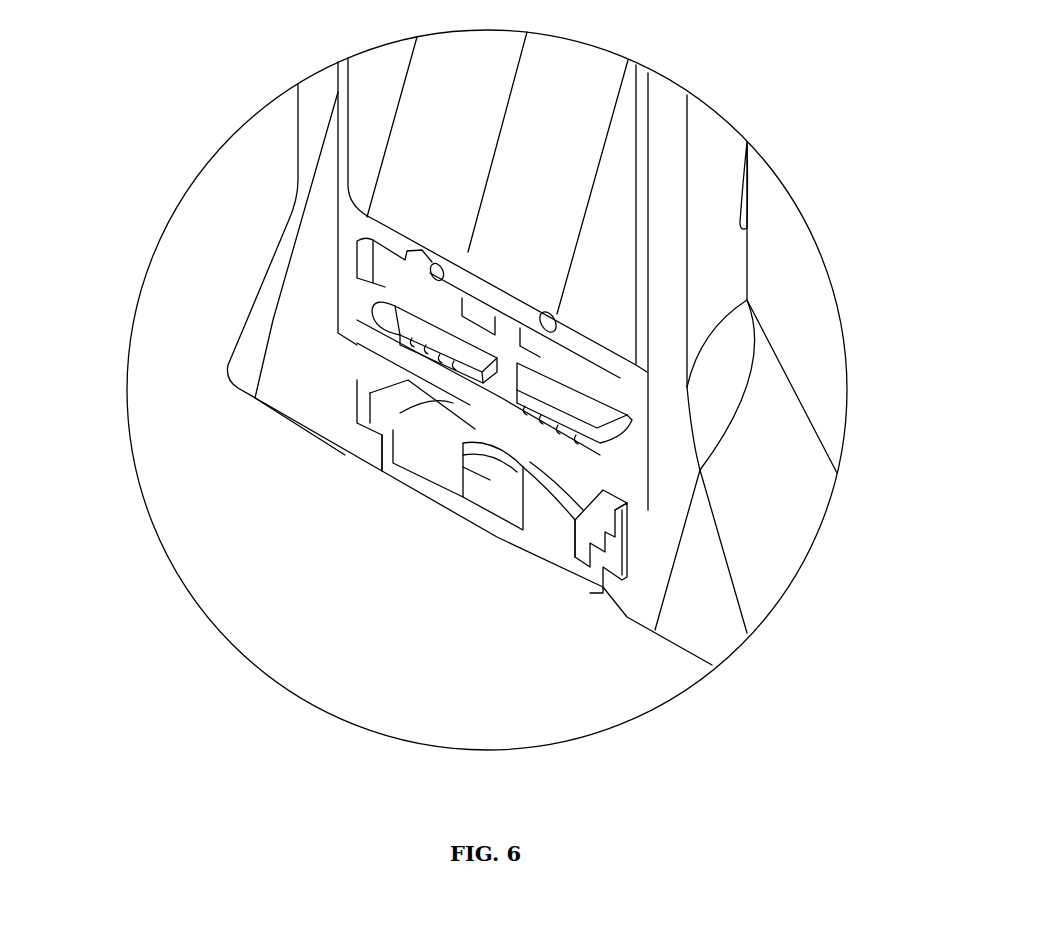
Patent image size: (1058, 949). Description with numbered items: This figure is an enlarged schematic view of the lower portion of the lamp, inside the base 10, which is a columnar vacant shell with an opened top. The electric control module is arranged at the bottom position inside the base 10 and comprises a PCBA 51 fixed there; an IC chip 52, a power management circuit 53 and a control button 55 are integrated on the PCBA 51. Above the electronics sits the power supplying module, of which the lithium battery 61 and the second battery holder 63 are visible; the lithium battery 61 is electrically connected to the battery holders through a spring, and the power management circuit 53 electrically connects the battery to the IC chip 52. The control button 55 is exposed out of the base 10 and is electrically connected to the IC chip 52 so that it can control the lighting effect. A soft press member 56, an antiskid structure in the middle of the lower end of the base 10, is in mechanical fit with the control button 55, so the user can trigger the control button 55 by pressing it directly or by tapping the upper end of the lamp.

The base 10 is at (709, 301).
The PCBA 51 is at (613, 480).
The IC chip 52 is at (563, 400).
The power management circuit 53 is at (453, 328).
The control button 55 is at (474, 429).
The soft press member 56 is at (486, 505).
The lithium battery 61 is at (541, 165).
The second battery holder 63 is at (415, 267).